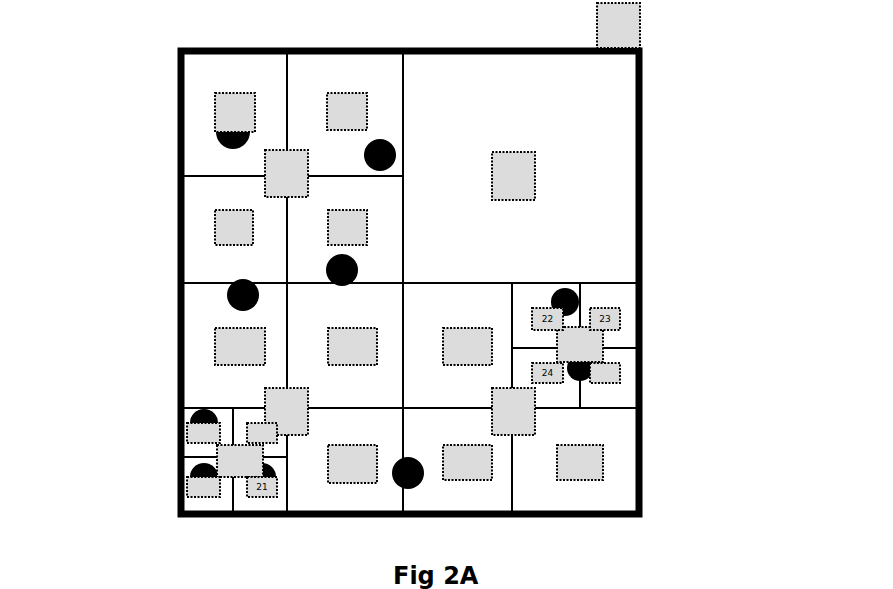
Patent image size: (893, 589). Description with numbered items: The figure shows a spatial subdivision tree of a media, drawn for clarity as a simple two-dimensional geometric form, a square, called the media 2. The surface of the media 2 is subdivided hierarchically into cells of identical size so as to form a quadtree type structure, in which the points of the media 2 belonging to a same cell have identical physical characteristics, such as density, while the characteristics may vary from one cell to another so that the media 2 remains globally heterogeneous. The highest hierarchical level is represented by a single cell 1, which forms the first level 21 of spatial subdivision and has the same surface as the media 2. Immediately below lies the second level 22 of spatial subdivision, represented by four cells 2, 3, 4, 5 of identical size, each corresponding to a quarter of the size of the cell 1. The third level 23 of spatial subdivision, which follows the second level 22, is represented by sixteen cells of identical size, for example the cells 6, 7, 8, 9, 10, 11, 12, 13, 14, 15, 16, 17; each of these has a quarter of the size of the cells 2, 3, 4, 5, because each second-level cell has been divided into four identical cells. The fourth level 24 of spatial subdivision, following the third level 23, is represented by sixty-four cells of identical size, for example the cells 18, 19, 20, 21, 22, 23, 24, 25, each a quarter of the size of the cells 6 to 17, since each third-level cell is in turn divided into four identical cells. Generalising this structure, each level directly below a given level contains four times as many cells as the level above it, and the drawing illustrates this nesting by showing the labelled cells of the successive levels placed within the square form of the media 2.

The cell 1 is at (618, 25).
The media 2 is at (181, 236).
The cell 3 is at (513, 176).
The cell 4 is at (286, 411).
The cell 5 is at (513, 411).
The cell 6 is at (235, 112).
The cell 7 is at (347, 111).
The cell 8 is at (234, 227).
The cell 9 is at (347, 227).
The cell 10 is at (240, 346).
The cell 11 is at (352, 346).
The cell 12 is at (240, 461).
The cell 13 is at (352, 464).
The cell 14 is at (467, 346).
The cell 15 is at (580, 344).
The cell 16 is at (467, 462).
The cell 17 is at (580, 462).
The cell 18 is at (203, 433).
The cell 19 is at (262, 433).
The cell 20 is at (203, 487).
The first level of spatial subdivision 21 is at (640, 26).
The second level of spatial subdivision 22 is at (612, 183).
The third level of spatial subdivision 23 is at (181, 106).
The fourth level of spatial subdivision 24 is at (630, 363).
The cell 25 is at (605, 373).